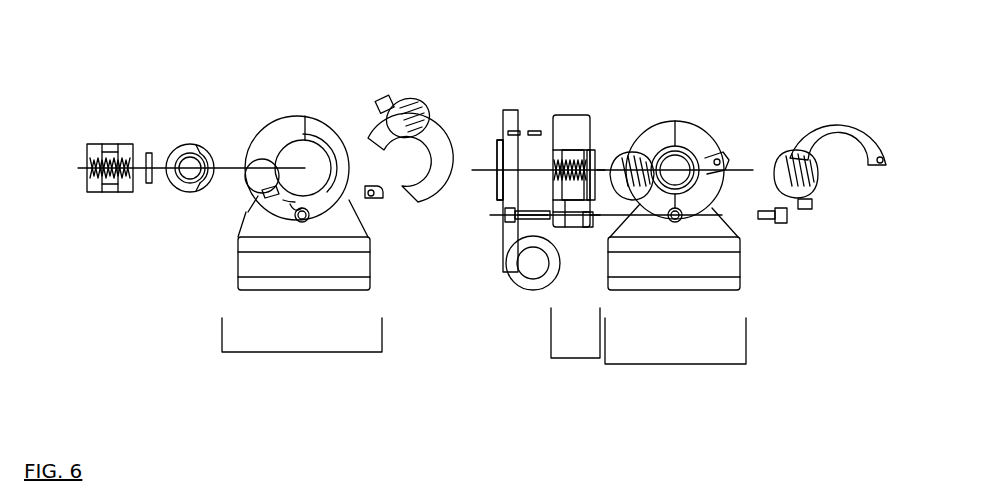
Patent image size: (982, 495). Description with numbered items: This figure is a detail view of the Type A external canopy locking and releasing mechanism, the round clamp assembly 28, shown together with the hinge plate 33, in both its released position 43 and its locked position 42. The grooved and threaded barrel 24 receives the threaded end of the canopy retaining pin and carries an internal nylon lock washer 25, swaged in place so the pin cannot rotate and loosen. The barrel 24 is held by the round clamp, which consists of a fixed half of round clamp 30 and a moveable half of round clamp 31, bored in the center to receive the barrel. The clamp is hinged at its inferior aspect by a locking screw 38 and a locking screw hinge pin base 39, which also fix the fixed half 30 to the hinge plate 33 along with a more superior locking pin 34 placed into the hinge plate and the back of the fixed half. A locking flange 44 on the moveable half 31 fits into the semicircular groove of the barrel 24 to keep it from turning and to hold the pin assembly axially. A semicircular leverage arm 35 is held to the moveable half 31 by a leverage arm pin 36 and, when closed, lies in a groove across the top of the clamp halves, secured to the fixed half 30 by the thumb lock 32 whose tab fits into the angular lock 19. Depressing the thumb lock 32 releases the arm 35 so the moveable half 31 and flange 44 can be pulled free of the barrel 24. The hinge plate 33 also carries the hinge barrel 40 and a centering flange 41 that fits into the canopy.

The angular lock 19 is at (258, 203).
The grooved and threaded barrel 24 is at (105, 140).
The nylon lock washer 25 is at (148, 140).
The Type A round clamp assembly 28 is at (565, 362).
The fixed half of round clamp 30 is at (292, 122).
The moveable half of round clamp 31 is at (370, 162).
The thumb lock 32 is at (410, 99).
The hinge plate 33 is at (250, 216).
The locking pin 34 is at (534, 122).
The leverage arm 35 is at (437, 160).
The leverage arm pin 36 is at (376, 198).
The locking screw 38 is at (783, 224).
The locking screw hinge pin base 39 is at (506, 222).
The hinge barrel of hinge flange 40 is at (366, 283).
The centering flange of hinge plate 41 is at (500, 187).
The Type A round clamp mechanism assembled 'Locked position' 42 is at (680, 367).
The Type A round clamp mechanism assembled 'Released position' 43 is at (303, 355).
The locking flange 44 is at (350, 204).